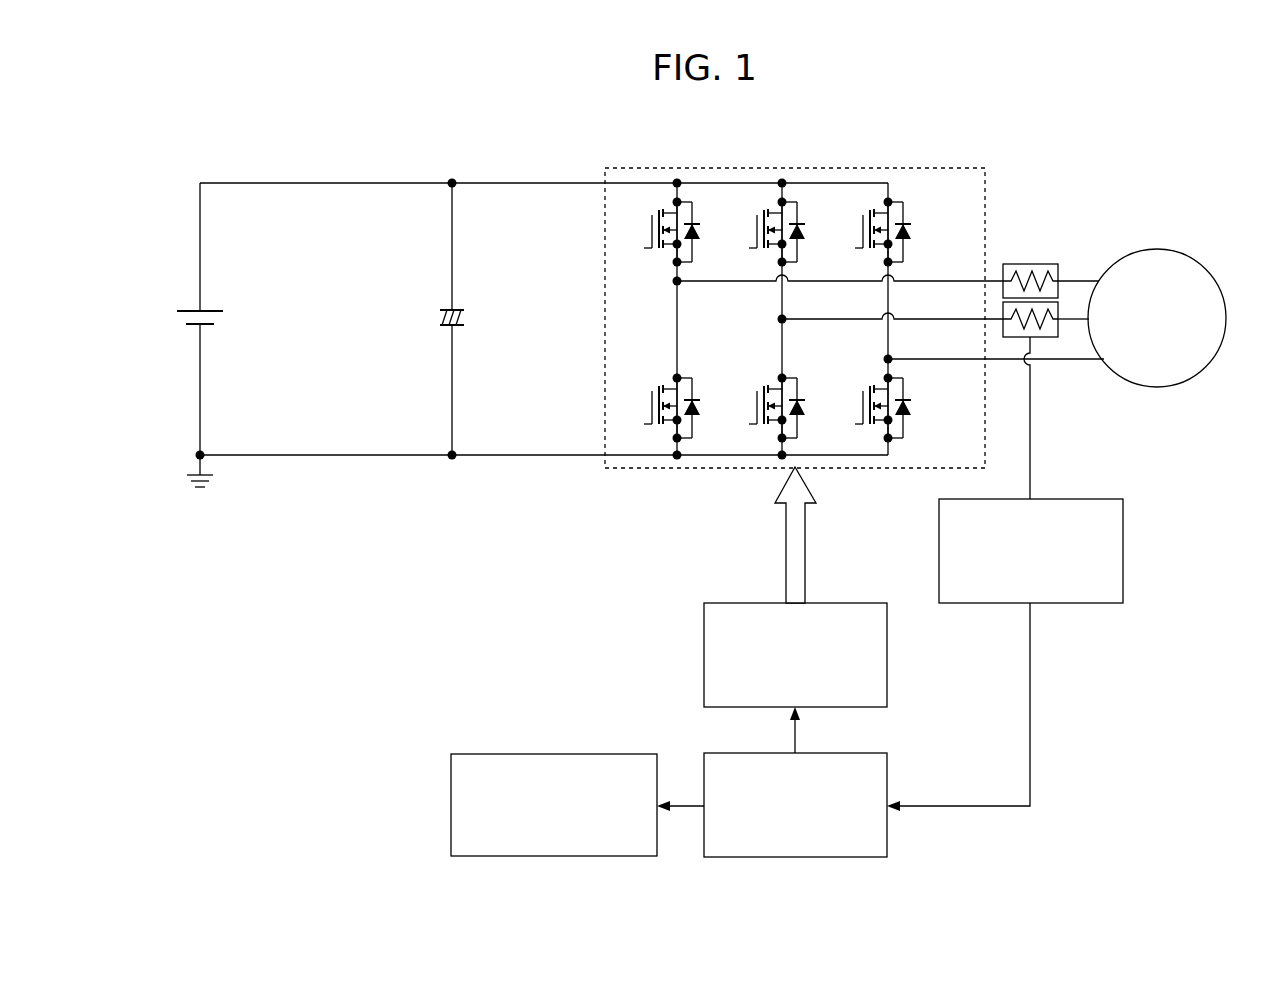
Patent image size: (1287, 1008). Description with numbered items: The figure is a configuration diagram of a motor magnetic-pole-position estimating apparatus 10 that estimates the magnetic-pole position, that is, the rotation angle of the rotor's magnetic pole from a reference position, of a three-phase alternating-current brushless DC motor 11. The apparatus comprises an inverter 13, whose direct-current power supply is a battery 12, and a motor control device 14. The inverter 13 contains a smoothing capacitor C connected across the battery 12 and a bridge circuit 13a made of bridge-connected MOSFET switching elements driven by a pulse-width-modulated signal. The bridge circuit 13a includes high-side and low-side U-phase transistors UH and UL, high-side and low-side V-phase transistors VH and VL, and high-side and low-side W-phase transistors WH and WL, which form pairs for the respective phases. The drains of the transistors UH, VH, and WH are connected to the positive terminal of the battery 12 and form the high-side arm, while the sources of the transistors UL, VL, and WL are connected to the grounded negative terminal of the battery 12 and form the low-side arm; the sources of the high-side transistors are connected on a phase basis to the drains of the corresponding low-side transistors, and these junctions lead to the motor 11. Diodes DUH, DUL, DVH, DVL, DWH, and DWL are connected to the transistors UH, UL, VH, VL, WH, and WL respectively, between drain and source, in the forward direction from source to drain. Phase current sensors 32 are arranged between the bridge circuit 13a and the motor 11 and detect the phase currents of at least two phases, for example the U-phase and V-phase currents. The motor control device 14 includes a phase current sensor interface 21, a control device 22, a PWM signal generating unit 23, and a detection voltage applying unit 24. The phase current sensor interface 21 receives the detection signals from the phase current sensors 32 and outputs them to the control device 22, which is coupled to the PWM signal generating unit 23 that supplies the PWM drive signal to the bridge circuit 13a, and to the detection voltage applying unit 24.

The motor magnetic-pole-position estimating apparatus 10 is at (1129, 180).
The three-phase alternating-current brushless DC motor 11 is at (1208, 269).
The battery 12 is at (207, 309).
The inverter 13 is at (764, 290).
The bridge circuit 13a is at (965, 167).
The motor control device 14 is at (740, 662).
The phase current sensor interface (I/F) 21 is at (1088, 499).
The control device 22 is at (889, 775).
The PWM signal generating unit 23 is at (854, 603).
The detection voltage applying unit 24 is at (633, 754).
The phase current sensors 32 is at (1056, 302).
The smoothing capacitor C is at (446, 311).
The high-side U-phase transistor UH is at (647, 232).
The high-side V-phase transistor VH is at (752, 232).
The high-side W-phase transistor WH is at (857, 232).
The low-side U-phase transistor UL is at (648, 408).
The low-side V-phase transistor VL is at (753, 408).
The low-side W-phase transistor WL is at (857, 408).
The diode DUH is at (700, 228).
The diode DVH is at (805, 228).
The diode DWH is at (915, 230).
The diode DUL is at (700, 404).
The diode DVL is at (805, 404).
The diode DWL is at (915, 406).